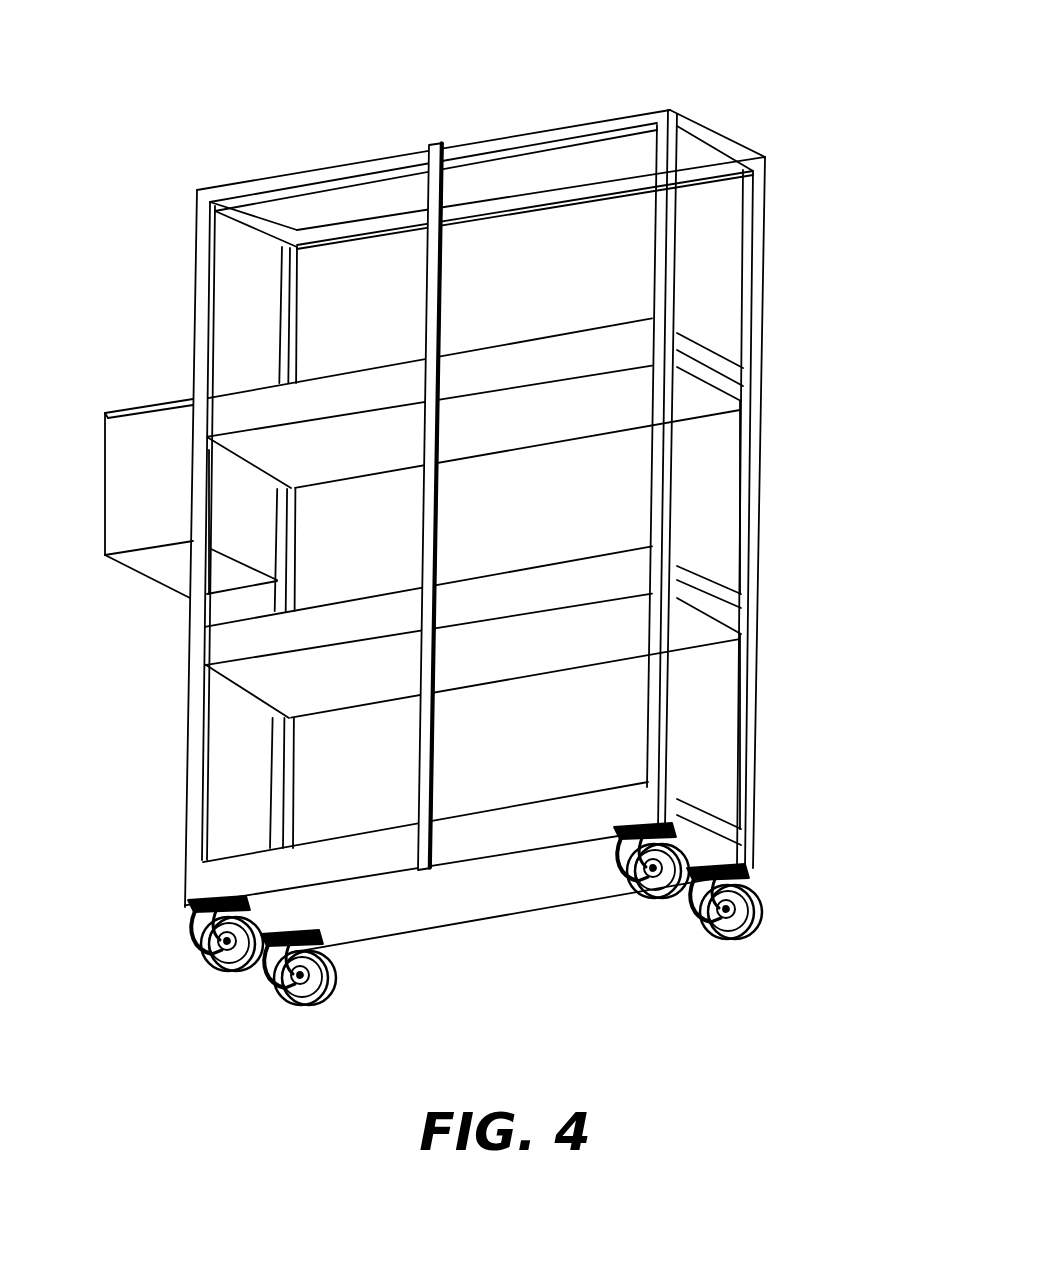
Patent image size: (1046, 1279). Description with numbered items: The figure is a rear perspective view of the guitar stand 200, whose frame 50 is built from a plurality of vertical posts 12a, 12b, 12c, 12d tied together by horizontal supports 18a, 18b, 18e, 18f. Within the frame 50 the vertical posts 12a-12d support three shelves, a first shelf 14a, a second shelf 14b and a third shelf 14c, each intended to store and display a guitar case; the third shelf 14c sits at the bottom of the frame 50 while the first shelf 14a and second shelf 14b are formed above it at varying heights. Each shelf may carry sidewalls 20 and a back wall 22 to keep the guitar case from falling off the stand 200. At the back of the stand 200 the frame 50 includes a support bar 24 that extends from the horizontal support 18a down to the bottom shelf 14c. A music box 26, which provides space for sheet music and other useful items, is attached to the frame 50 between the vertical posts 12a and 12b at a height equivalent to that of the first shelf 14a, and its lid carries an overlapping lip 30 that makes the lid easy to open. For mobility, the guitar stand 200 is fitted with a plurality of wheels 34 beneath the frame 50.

The guitar stand 200 is at (207, 82).
The frame 50 is at (339, 82).
The vertical post 12a is at (285, 297).
The vertical post 12b is at (197, 300).
The vertical post 12c is at (753, 223).
The vertical post 12d is at (660, 278).
The first shelf 14a is at (683, 415).
The second shelf 14b is at (683, 637).
The third shelf 14c is at (559, 835).
The horizontal support 18a is at (503, 143).
The horizontal support 18b is at (521, 213).
The horizontal support 18e is at (712, 138).
The horizontal support 18f is at (250, 218).
The sidewalls 20 is at (684, 333).
The back wall 22 is at (503, 350).
The support bar 24 is at (428, 186).
The music box 26 is at (105, 478).
The overlapping lip 30 is at (104, 413).
The wheels 34 is at (232, 975).